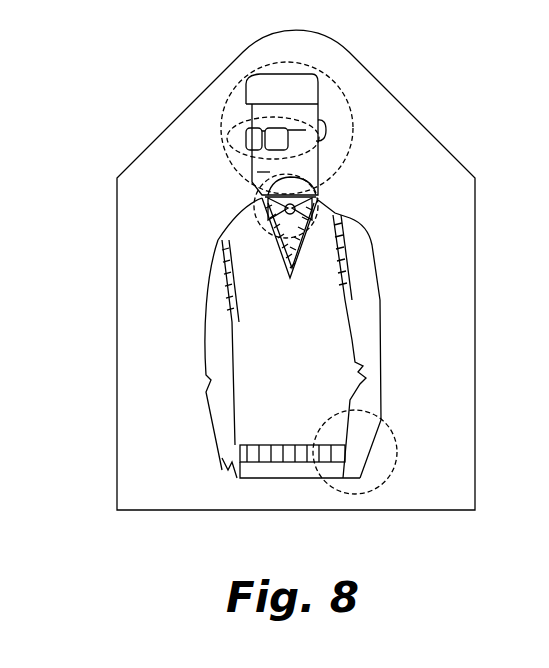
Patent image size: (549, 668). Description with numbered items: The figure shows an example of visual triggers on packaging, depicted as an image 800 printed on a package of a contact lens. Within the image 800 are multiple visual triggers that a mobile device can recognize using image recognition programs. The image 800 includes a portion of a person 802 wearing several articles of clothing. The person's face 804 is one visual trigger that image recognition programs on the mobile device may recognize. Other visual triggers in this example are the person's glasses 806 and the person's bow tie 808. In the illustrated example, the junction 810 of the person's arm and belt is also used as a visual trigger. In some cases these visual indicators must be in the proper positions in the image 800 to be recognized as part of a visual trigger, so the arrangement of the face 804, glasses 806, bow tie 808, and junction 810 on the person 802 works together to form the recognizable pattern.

The image 800 is at (91, 121).
The person 802 is at (184, 244).
The person's face 804 is at (221, 86).
The person's glasses 806 is at (318, 132).
The person's bow tie 808 is at (280, 240).
The junction of the person's arm and belt 810 is at (318, 432).